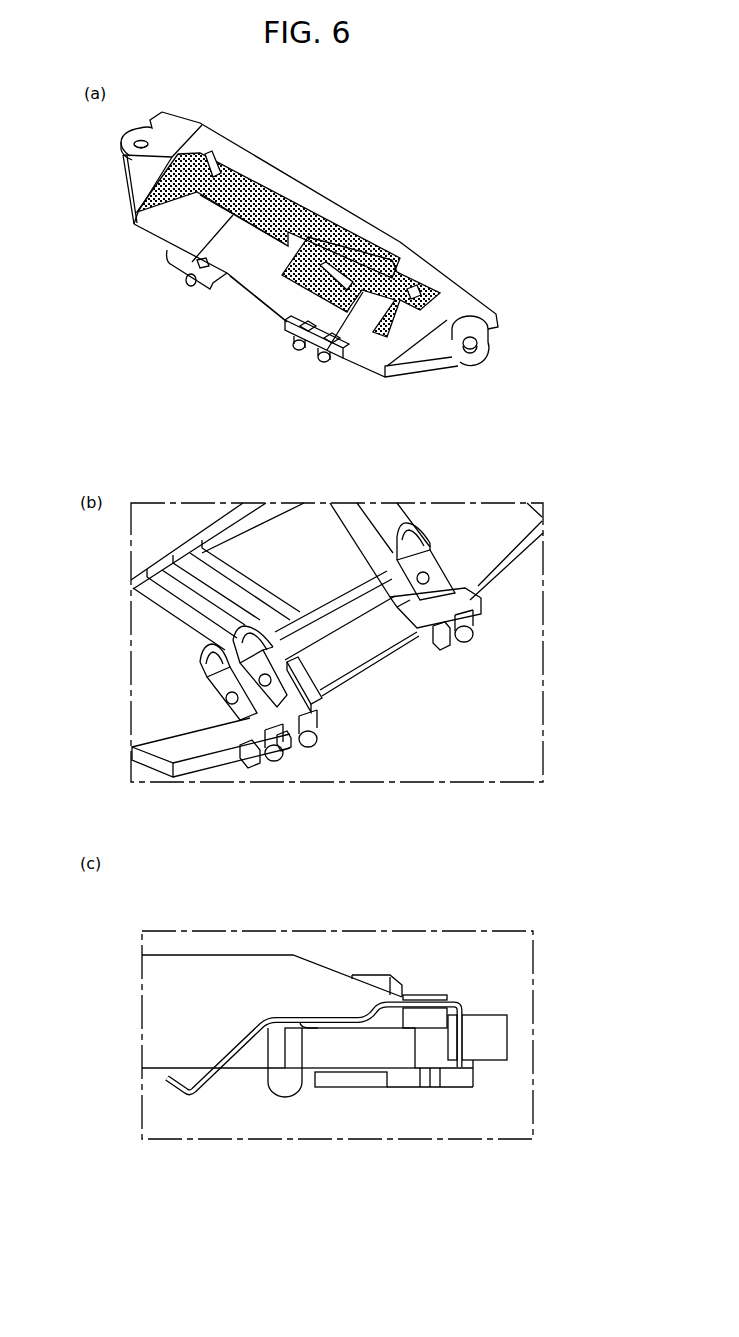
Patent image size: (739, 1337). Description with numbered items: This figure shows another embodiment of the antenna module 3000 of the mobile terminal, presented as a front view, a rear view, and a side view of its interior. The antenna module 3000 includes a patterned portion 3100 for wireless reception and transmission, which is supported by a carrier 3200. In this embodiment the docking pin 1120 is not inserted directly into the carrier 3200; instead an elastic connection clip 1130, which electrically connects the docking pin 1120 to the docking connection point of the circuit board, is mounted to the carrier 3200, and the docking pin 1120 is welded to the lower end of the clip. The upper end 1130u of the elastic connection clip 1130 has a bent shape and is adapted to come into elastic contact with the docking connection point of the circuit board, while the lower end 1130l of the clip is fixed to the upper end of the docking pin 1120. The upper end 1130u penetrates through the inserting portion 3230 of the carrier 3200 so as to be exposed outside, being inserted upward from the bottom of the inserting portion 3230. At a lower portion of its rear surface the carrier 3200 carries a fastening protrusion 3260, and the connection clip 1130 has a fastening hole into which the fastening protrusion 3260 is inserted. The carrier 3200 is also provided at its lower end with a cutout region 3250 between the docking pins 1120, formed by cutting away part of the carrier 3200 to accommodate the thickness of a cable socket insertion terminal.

The antenna module 3000 is at (323, 138).
The patterned portion 3100 is at (344, 239).
The carrier 3200 is at (411, 368).
The cutout region 3250 is at (279, 318).
The docking pin 1120 is at (320, 362).
The elastic connection clip 1130 is at (205, 654).
The fastening protrusion 3260 is at (227, 700).
The inserting portion 3230 is at (293, 713).
The upper end of the elastic connection clip 1130u is at (223, 1078).
The lower end of the elastic connection clip 1130l is at (458, 1042).